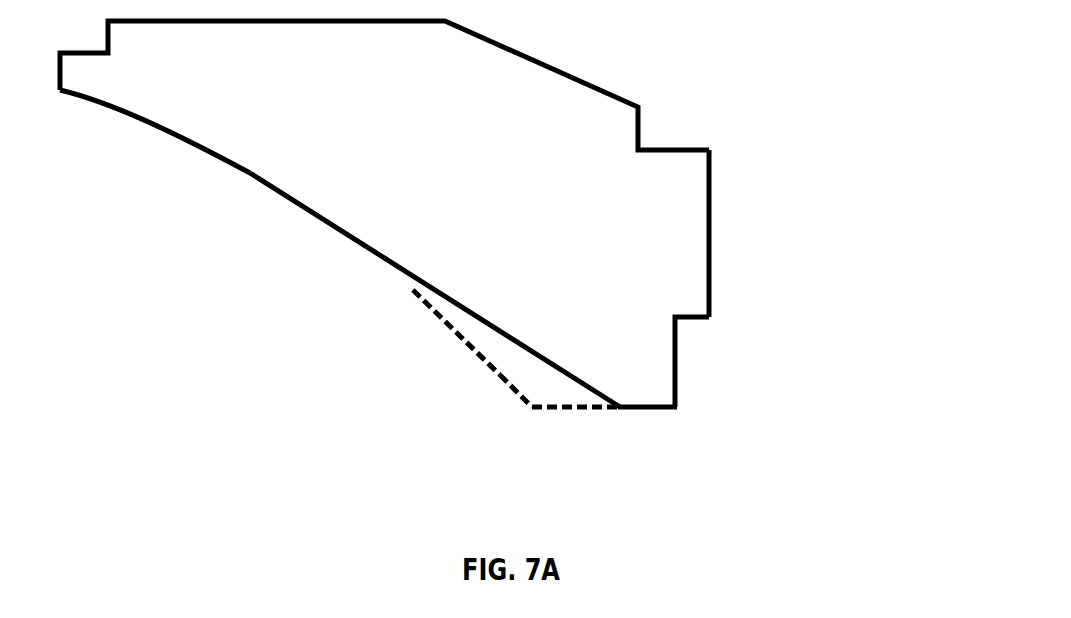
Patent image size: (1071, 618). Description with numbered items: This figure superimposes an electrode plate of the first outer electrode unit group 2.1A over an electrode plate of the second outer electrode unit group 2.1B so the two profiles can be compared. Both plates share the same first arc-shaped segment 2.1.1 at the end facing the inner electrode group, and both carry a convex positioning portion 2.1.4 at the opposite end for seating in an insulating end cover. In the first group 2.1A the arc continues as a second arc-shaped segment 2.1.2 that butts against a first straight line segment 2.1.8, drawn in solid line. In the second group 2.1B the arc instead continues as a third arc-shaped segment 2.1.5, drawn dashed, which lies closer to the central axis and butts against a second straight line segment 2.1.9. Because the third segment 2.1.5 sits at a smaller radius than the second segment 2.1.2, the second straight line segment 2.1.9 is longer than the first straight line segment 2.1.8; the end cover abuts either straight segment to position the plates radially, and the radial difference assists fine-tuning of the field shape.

The first outer electrode unit group 2.1A is at (468, 197).
The first arc-shaped segment 2.1.1 is at (207, 152).
The second arc-shaped segment 2.1.2 is at (508, 343).
The positioning portion 2.1.4 is at (680, 235).
The second outer electrode unit group 2.1B is at (500, 373).
The third arc-shaped segment 2.1.5 is at (520, 396).
The second straight line segment 2.1.9 is at (575, 415).
The first straight line segment 2.1.8 is at (657, 417).